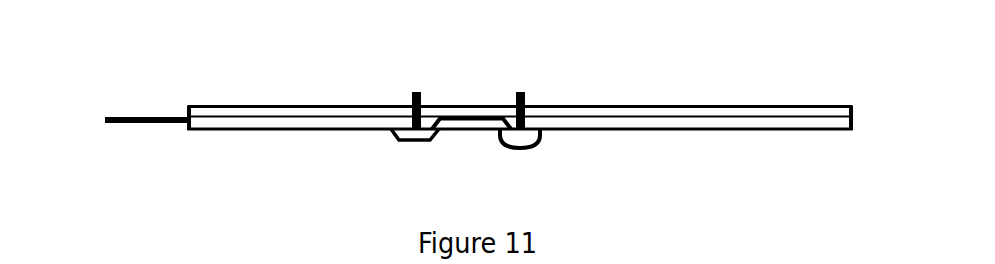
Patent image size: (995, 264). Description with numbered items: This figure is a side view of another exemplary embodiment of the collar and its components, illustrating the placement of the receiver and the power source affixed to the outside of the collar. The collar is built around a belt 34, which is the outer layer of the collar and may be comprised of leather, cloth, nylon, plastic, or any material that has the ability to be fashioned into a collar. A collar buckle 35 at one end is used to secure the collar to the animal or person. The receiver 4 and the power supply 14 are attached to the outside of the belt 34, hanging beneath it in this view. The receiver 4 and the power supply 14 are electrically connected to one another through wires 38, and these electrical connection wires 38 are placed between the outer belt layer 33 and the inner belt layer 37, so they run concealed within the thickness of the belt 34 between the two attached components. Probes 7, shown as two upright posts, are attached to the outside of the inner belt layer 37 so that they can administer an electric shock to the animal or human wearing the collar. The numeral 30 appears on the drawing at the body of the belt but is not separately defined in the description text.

The collar buckle 35 is at (139, 118).
The probes 7 is at (418, 92).
The substrate 30 is at (677, 105).
The inner belt layer 37 is at (812, 107).
The belt 34 is at (546, 118).
The outer belt layer 33 is at (802, 129).
The receiver 4 is at (415, 140).
The wires 38 is at (468, 121).
The power supply 14 is at (517, 136).